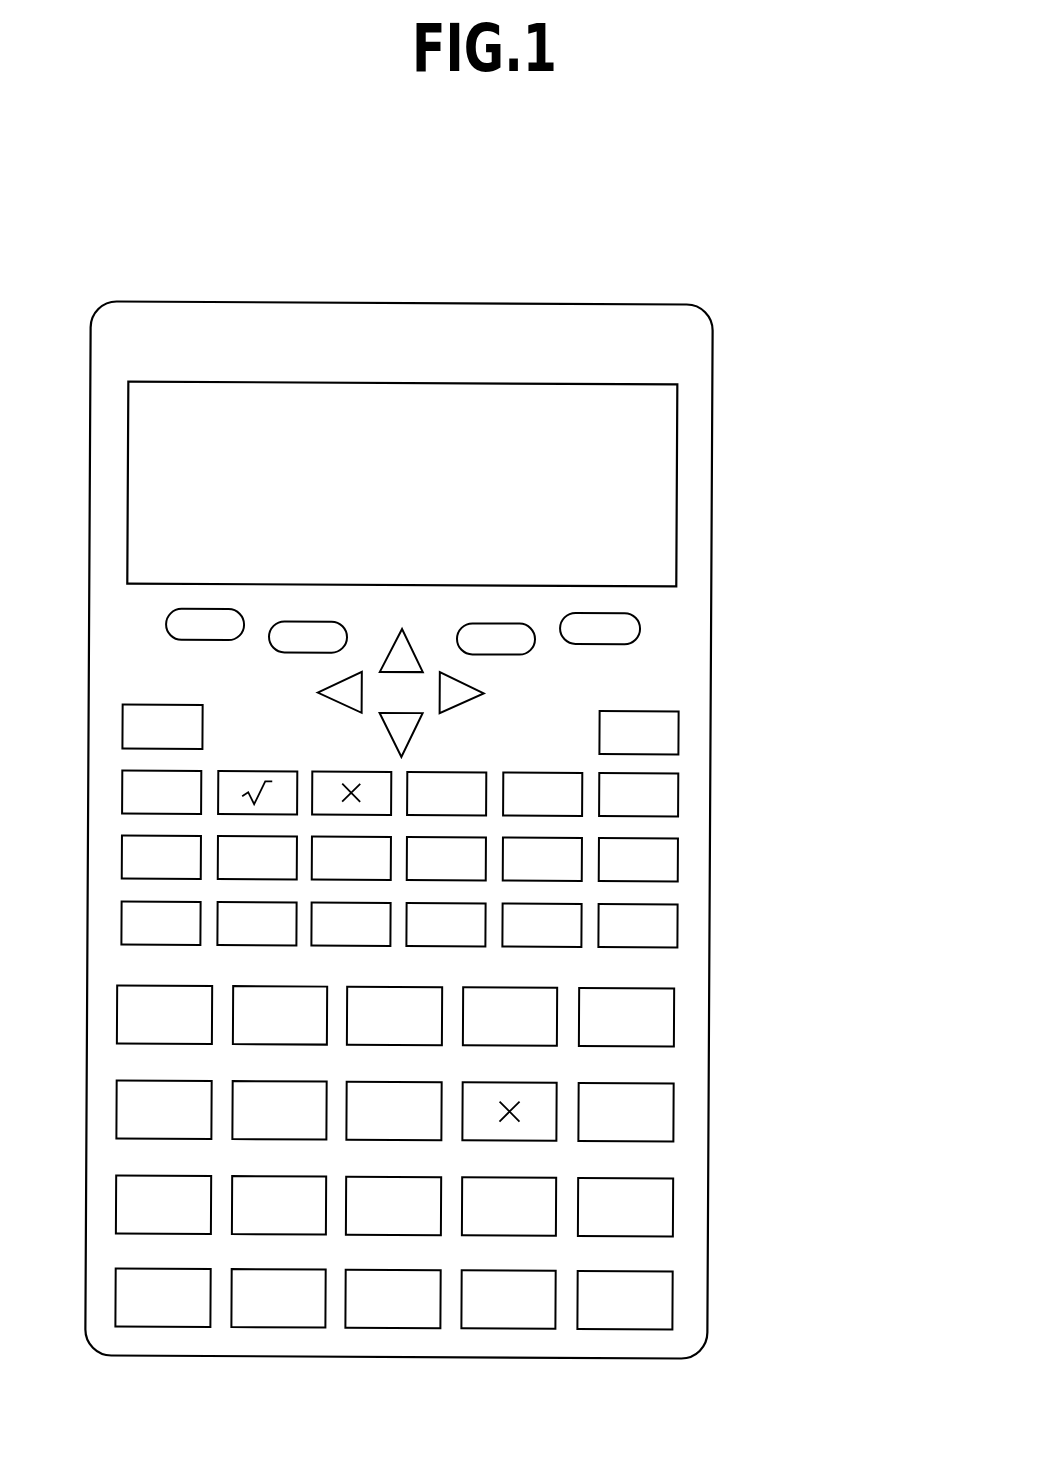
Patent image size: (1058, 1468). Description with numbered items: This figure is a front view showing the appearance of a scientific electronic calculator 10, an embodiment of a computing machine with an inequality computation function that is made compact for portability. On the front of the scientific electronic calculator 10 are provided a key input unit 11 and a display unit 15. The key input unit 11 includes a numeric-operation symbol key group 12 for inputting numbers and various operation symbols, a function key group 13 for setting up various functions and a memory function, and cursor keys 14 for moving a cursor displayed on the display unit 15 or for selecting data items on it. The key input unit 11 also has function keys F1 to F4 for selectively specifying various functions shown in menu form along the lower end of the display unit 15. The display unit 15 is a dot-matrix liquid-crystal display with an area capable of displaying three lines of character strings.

The scientific electronic calculator 10 is at (451, 285).
The key input unit 11 is at (816, 607).
The numeric-operation symbol key group 12 is at (729, 992).
The function key group 13 is at (732, 708).
The cursor keys 14 is at (402, 692).
The display unit 15 is at (663, 452).